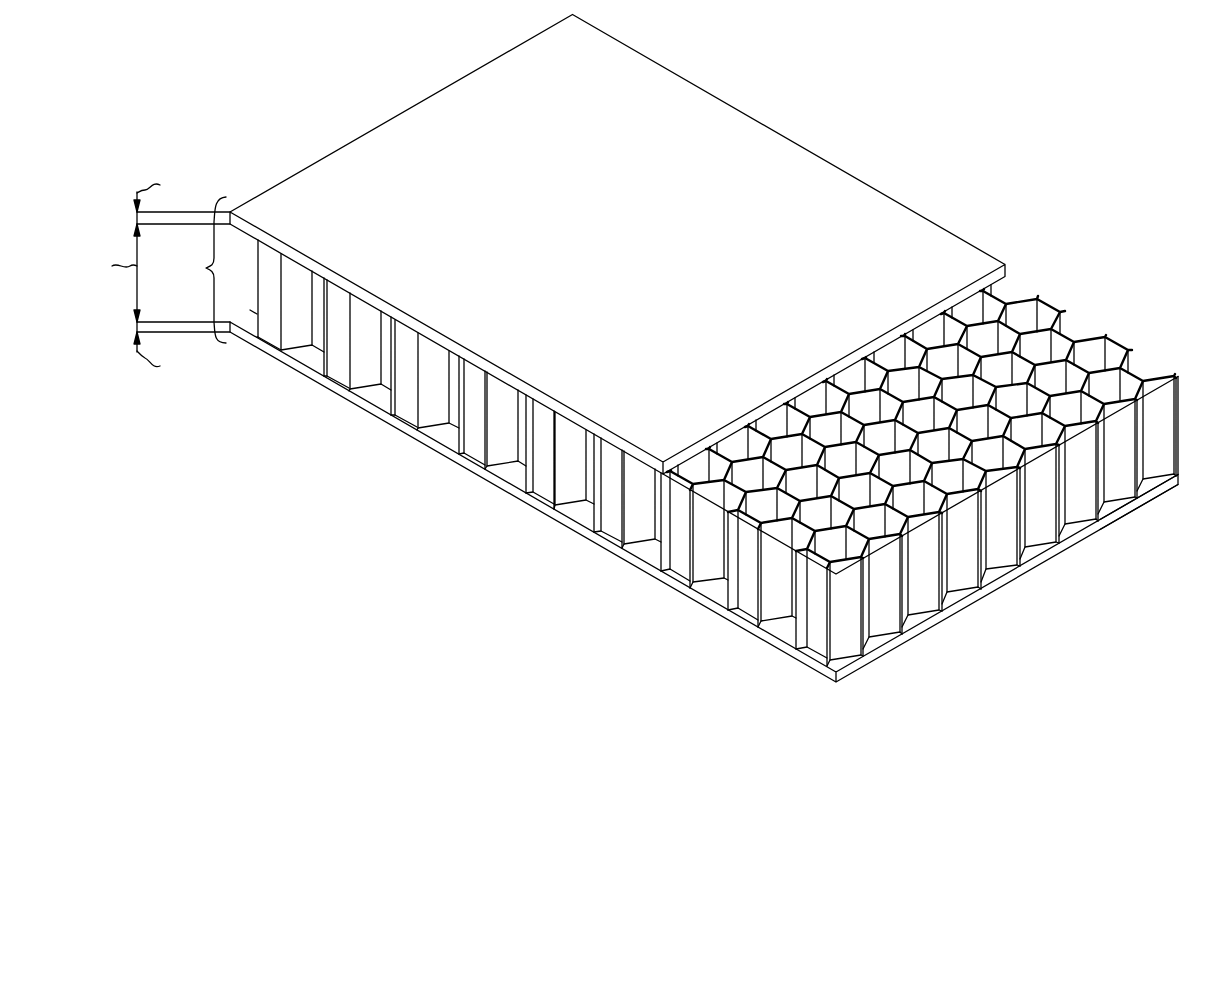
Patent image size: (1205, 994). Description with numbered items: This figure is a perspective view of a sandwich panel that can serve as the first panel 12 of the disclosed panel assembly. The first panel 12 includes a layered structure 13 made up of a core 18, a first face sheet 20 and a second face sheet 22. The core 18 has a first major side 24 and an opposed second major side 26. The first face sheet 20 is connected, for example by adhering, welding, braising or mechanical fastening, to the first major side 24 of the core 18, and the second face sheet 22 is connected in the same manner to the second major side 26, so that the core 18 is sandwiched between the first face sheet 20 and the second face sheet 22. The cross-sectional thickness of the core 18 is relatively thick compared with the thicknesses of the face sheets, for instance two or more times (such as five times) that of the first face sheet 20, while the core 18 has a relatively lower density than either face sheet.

The first panel 12 is at (1050, 131).
The layered structure 13 is at (207, 268).
The core 18 is at (545, 487).
The first face sheet 20 is at (413, 317).
The second face sheet 22 is at (426, 435).
The first major side 24 is at (1163, 386).
The second major side 26 is at (1163, 476).